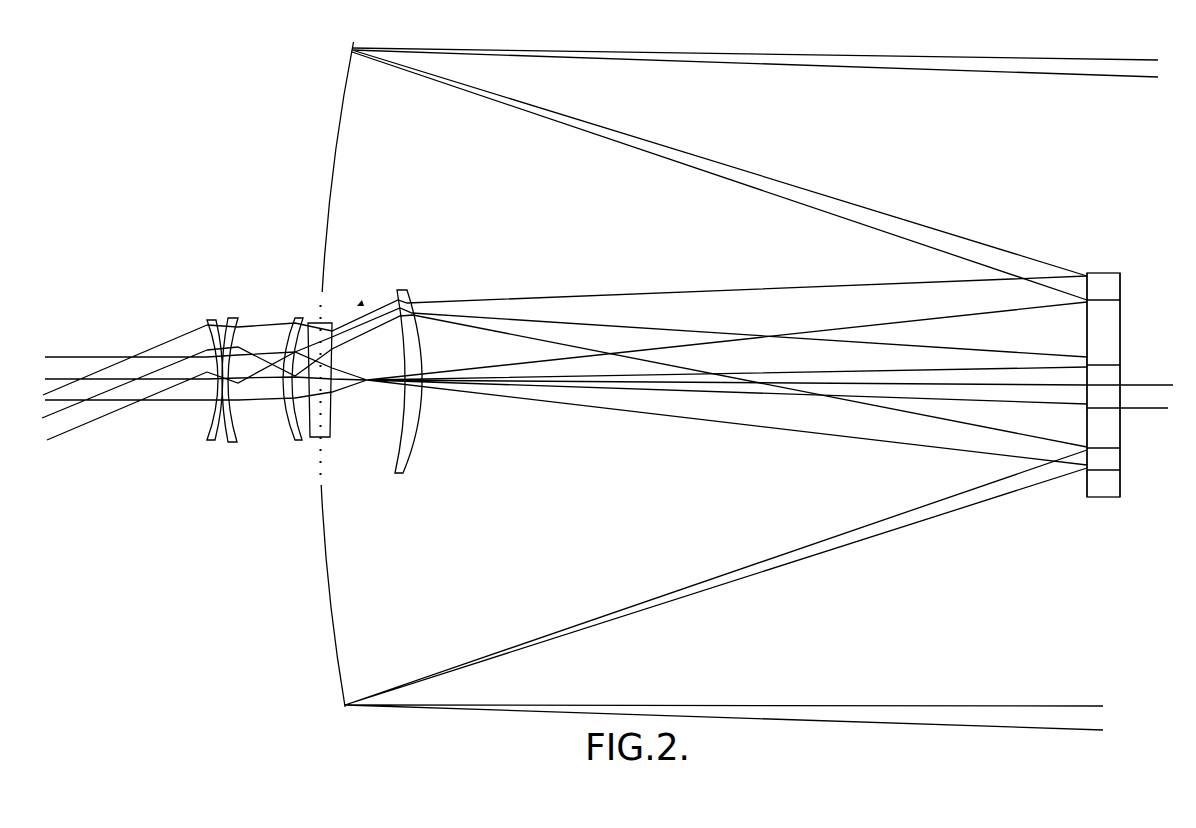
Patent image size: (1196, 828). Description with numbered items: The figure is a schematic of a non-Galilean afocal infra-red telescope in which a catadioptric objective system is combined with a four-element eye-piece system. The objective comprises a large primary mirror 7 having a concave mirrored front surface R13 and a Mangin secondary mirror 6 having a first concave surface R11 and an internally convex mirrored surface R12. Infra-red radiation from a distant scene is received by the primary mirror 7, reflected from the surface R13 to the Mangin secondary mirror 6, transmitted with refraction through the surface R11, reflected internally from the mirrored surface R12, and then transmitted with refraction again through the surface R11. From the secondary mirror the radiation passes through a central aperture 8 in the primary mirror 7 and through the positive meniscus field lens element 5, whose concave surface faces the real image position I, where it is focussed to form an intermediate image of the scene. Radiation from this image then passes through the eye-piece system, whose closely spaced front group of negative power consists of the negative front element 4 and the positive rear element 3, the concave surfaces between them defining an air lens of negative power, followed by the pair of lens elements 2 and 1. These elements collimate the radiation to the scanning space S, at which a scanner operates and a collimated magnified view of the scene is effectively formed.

The lens element 1 is at (207, 433).
The lens element 2 is at (236, 444).
The rear element 3 is at (293, 438).
The front element 4 is at (327, 434).
The field lens element 5 is at (408, 450).
The Mangin secondary mirror 6 is at (1099, 404).
The primary mirror 7 is at (358, 374).
The central aperture 8 is at (307, 470).
The first concave surface R11 is at (1087, 328).
The internally convex mirrored surface R12 is at (1118, 337).
The concave mirrored front surface R13 is at (335, 160).
The scanning space S is at (136, 332).
The real image position I is at (359, 303).